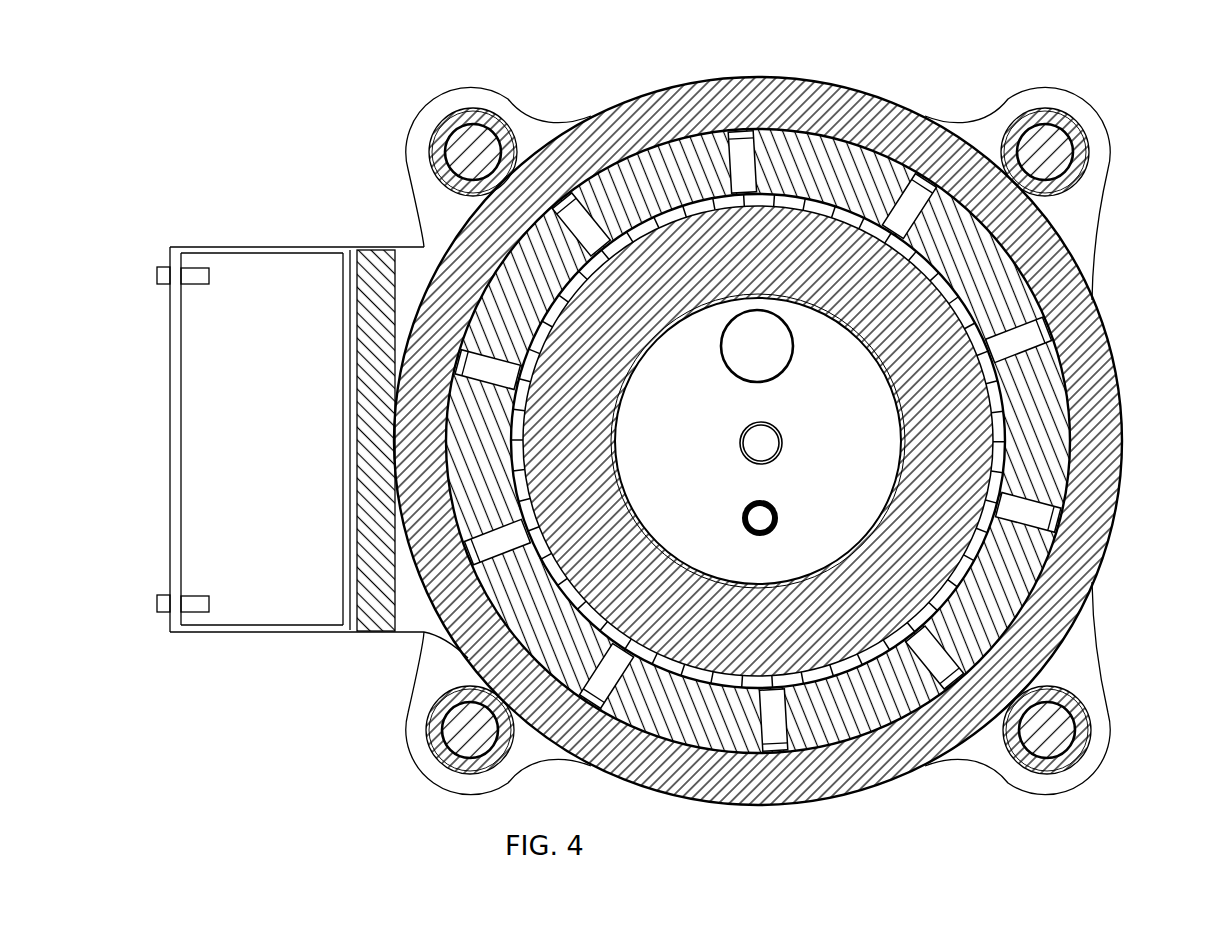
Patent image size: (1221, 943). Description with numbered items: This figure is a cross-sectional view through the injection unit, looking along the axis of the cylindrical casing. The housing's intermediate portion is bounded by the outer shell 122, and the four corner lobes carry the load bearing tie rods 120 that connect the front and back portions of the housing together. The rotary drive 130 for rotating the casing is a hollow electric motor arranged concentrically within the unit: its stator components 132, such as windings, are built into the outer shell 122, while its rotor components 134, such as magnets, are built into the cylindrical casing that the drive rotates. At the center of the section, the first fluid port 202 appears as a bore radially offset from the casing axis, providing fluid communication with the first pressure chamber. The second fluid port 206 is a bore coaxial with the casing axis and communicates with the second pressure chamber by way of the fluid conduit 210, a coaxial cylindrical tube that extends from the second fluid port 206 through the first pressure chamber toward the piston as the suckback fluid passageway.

The tie rods 120 is at (460, 152).
The outer shell 122 is at (1118, 395).
The rotary drive 130 is at (930, 87).
The stator components 132 is at (1040, 505).
The rotor components 134 is at (1000, 322).
The first fluid port 202 is at (771, 350).
The second fluid port 206 is at (764, 444).
The fluid conduit 210 is at (747, 460).